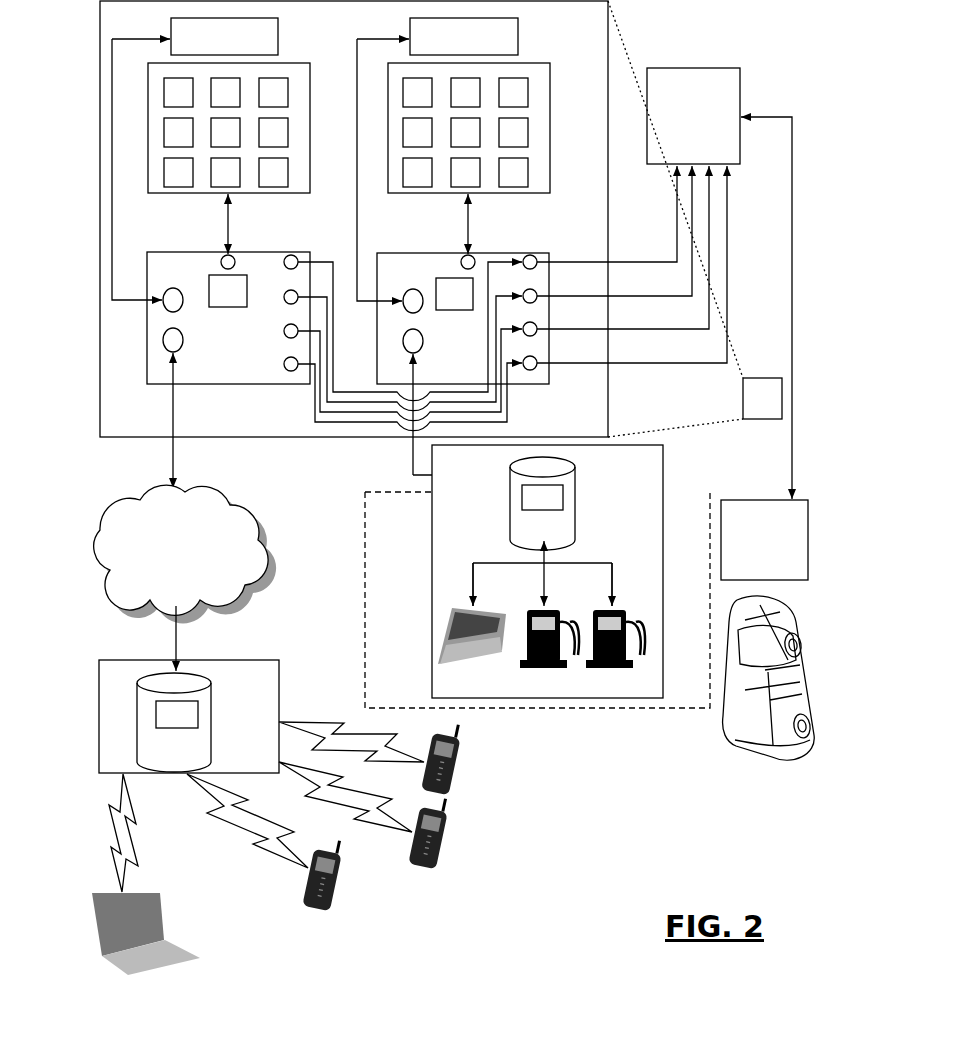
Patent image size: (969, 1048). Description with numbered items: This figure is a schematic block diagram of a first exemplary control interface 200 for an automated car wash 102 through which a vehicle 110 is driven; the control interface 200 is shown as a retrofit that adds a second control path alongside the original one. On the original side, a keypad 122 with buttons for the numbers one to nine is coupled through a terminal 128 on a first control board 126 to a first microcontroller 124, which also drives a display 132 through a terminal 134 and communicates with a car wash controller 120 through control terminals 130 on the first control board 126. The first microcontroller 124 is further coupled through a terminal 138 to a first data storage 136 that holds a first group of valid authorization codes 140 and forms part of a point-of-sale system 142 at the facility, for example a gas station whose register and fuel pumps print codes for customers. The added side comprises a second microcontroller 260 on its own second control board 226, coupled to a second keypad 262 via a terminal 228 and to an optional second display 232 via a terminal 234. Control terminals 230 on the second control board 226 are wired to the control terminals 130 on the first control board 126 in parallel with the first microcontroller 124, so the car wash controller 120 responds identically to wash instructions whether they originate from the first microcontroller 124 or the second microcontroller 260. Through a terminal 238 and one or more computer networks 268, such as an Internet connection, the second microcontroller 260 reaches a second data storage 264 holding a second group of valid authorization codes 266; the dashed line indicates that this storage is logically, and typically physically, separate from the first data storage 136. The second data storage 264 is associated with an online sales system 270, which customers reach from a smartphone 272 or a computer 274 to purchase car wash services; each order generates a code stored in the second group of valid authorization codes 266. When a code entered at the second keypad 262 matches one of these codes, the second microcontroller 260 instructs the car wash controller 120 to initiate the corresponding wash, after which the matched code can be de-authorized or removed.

The car wash 102 is at (764, 540).
The vehicle 110 is at (769, 678).
The car wash controller 120 is at (719, 283).
The keypad 122 is at (411, 196).
The first microcontroller 124 is at (454, 294).
The first control board 126 is at (463, 318).
The terminal 128 is at (461, 263).
The control terminals 130 is at (538, 363).
The display 132 is at (437, 36).
The terminal 134 is at (405, 305).
The first data storage 136 is at (542, 531).
The terminal 138 is at (405, 345).
The first group of valid authorization codes 140 is at (542, 497).
The point-of-sale system 142 is at (472, 648).
The control interface 200 is at (695, 219).
The second control board 226 is at (228, 318).
The terminal 228 is at (221, 263).
The control terminals 230 is at (284, 364).
The second display 232 is at (195, 36).
The terminal 234 is at (165, 305).
The terminal 238 is at (165, 345).
The second microcontroller 260 is at (228, 291).
The second keypad 262 is at (181, 196).
The second data storage 264 is at (174, 722).
The second group of valid authorization codes 266 is at (177, 714).
The computer networks 268 is at (185, 578).
The online sales system 270 is at (189, 716).
The smartphone 272 is at (400, 920).
The computer 274 is at (160, 932).